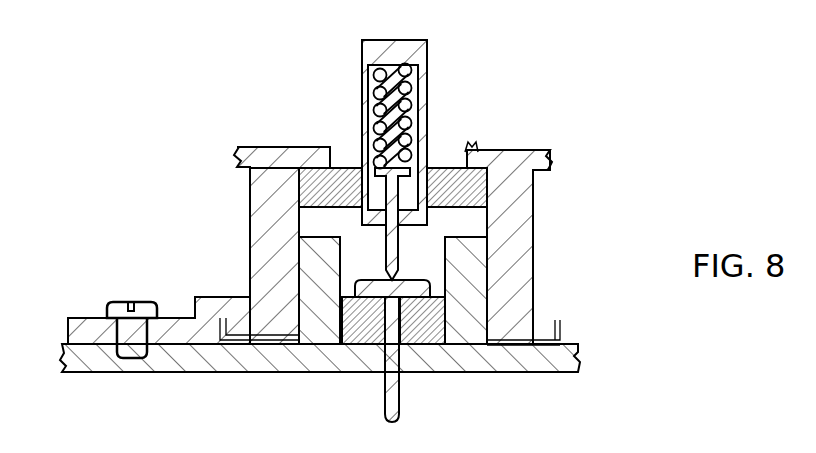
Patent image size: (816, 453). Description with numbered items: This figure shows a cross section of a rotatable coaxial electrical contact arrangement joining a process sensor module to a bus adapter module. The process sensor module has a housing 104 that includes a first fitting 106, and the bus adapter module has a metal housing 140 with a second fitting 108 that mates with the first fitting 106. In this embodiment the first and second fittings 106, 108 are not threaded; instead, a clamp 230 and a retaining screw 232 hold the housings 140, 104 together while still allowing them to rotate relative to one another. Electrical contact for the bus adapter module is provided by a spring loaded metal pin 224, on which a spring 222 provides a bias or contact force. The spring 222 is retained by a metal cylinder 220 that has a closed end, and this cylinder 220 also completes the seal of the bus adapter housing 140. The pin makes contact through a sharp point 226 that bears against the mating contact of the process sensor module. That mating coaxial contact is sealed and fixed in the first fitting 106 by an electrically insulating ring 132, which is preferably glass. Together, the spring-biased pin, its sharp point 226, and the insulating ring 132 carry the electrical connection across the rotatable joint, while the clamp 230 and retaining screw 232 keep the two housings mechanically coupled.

The housing 104 is at (221, 372).
The clamp 230 is at (68, 330).
The retaining screw 232 is at (118, 303).
The second fitting 108 is at (268, 228).
The metal housing 140 is at (260, 155).
The first fitting 106 is at (323, 302).
The spring loaded metal pin 224 is at (430, 167).
The electrically insulating ring 132 is at (427, 327).
The metal cylinder 220 is at (430, 55).
The spring 222 is at (393, 105).
The sharp point 226 is at (395, 263).